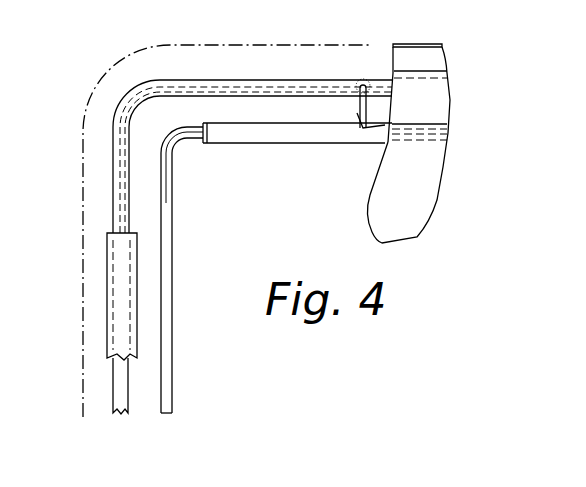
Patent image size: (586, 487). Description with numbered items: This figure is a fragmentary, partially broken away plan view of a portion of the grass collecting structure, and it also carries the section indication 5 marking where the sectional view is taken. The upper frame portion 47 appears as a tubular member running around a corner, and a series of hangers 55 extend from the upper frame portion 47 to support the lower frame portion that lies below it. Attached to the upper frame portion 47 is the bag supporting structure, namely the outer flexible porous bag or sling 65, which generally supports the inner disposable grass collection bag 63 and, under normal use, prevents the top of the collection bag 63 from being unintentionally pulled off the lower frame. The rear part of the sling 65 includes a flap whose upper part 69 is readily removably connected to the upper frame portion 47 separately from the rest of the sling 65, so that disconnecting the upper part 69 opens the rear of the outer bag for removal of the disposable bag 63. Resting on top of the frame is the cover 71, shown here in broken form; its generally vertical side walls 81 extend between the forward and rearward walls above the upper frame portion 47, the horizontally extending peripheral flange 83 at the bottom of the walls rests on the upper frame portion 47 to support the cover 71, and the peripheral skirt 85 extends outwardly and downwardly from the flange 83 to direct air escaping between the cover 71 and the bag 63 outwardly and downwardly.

The outer bag or sling 65 is at (298, 83).
The upper frame portion 47 is at (260, 83).
The grass collection bag 63 is at (292, 128).
The hangers 55 is at (357, 113).
The upper part 69 is at (127, 248).
The cover 71 is at (445, 136).
The peripheral skirt 85 is at (417, 45).
The peripheral flange 83 is at (408, 107).
The side walls 81 is at (417, 127).
The section line 5- 5 is at (62, 263).